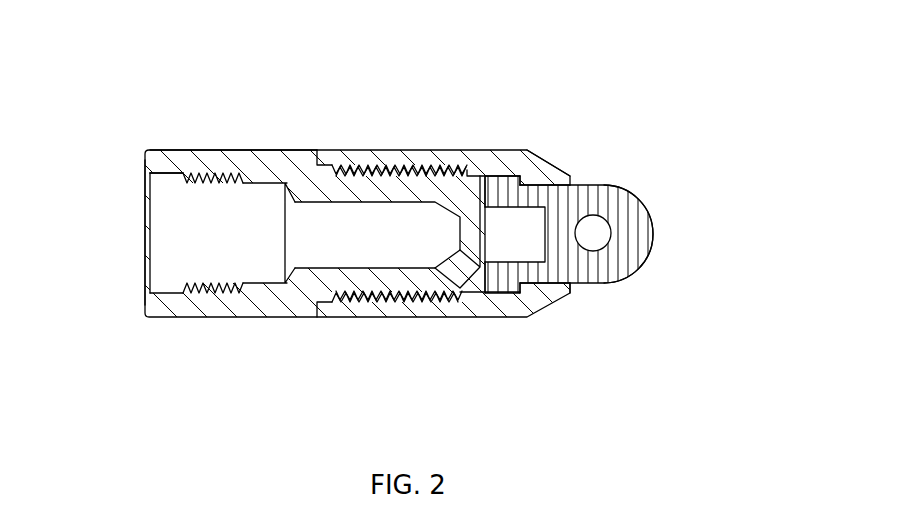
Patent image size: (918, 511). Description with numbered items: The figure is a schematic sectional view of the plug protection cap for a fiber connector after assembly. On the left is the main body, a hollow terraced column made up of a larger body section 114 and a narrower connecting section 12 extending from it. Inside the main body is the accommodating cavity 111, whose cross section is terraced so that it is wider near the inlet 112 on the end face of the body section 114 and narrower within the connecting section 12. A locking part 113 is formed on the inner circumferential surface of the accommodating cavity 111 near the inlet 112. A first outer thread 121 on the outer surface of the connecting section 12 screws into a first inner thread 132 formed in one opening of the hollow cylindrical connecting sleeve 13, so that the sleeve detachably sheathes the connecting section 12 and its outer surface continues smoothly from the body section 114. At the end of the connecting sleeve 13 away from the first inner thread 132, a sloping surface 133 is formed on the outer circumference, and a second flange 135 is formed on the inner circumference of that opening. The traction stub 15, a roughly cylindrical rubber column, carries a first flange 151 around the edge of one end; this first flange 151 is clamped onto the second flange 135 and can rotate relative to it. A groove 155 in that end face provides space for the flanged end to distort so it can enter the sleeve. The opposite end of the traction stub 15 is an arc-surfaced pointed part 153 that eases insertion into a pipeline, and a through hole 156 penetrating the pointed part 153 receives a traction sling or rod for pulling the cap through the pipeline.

The accommodating cavity 111 is at (243, 242).
The inlet 112 is at (143, 232).
The locking part 113 is at (197, 300).
The body section 114 is at (232, 160).
The connecting section 12 is at (405, 300).
The first outer thread 121 is at (321, 300).
The connecting sleeve 13 is at (405, 162).
The first inner thread 132 is at (357, 160).
The sloping surface 133 is at (540, 295).
The second flange 135 is at (528, 178).
The traction stub 15 is at (620, 272).
The first flange 151 is at (513, 177).
The pointed part 153 is at (650, 220).
The groove 155 is at (507, 245).
The through hole 156 is at (593, 228).